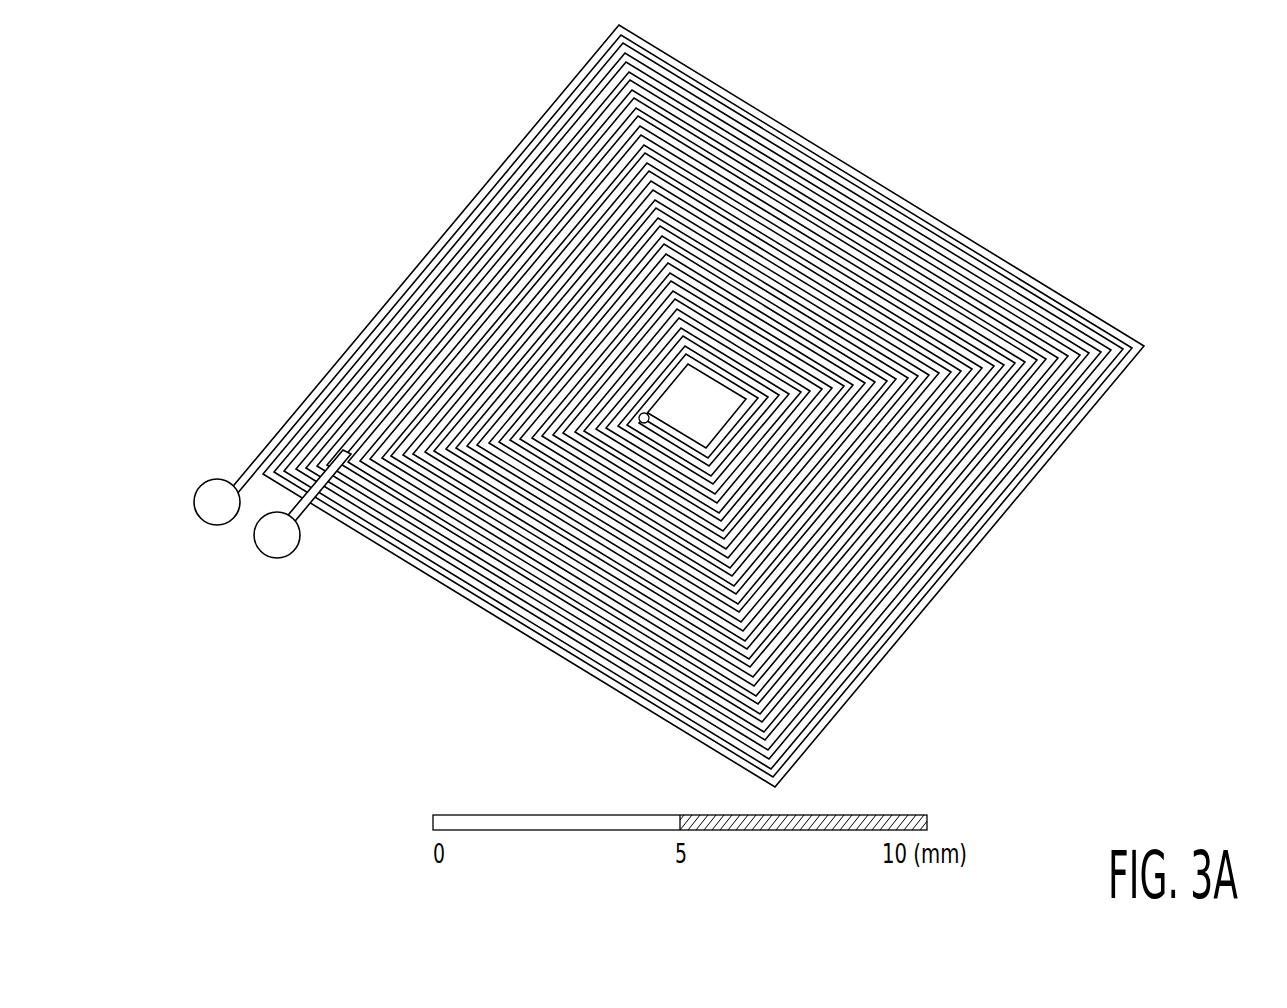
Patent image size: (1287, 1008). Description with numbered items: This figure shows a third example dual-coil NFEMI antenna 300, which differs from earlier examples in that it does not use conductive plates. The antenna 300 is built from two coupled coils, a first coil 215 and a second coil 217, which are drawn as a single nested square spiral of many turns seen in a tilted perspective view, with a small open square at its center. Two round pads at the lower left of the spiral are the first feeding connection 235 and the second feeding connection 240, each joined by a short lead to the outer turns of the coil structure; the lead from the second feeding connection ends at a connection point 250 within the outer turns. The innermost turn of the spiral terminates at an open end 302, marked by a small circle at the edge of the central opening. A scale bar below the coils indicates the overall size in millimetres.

The dual-coil NFEMI antenna 300 is at (620, 406).
The coil L1 215 is at (363, 358).
The coil L2 217 is at (482, 476).
The first feeding connection 235 is at (199, 514).
The second feeding connection 240 is at (260, 552).
The connection point 250 is at (347, 463).
The open end 302 is at (649, 418).